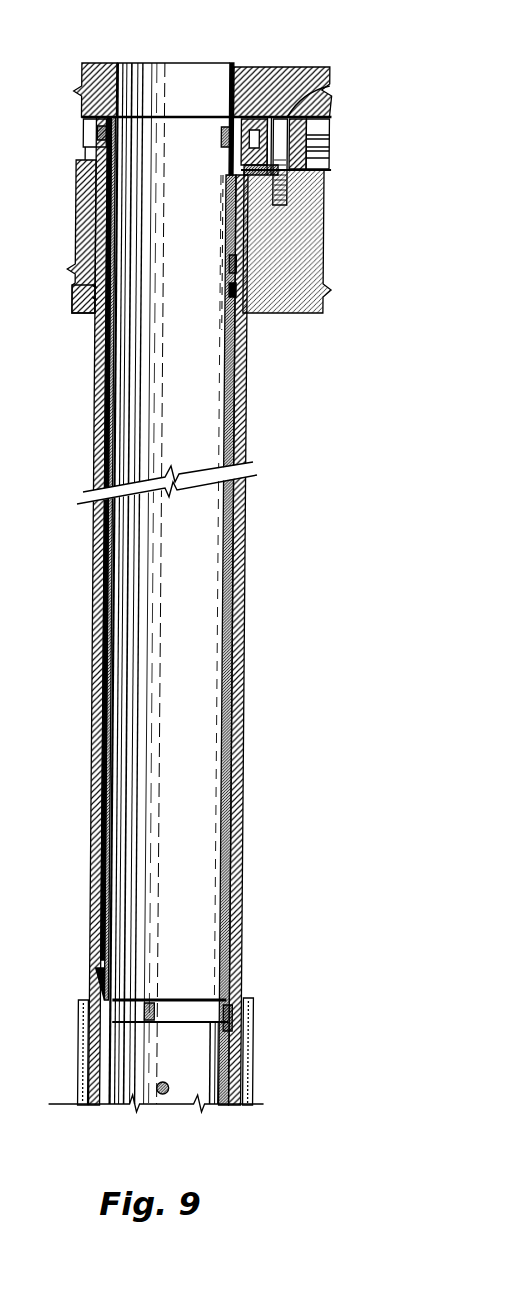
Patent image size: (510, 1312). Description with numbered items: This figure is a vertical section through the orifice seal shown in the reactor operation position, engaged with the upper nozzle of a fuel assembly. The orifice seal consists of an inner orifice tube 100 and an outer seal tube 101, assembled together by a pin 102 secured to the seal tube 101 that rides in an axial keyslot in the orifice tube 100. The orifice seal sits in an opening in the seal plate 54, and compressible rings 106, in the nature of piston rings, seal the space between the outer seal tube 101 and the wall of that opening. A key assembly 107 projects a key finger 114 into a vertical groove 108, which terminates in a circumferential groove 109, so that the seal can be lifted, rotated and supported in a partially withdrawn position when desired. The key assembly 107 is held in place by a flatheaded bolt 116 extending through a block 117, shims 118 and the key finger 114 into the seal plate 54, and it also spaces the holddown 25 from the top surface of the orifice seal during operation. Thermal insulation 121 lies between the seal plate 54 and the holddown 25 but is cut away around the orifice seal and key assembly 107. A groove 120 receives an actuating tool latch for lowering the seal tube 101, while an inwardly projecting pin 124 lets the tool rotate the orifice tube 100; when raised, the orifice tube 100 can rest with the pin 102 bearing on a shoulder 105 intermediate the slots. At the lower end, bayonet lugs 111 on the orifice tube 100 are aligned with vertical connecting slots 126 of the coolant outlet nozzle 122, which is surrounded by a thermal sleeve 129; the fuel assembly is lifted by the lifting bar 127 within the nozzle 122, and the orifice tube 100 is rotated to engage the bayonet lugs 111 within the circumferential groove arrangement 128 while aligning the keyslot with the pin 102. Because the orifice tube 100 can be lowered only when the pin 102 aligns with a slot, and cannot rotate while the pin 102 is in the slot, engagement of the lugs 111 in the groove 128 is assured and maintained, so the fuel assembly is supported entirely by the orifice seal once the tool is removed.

The holddown 25 is at (266, 66).
The flatheaded bolt 116 is at (306, 108).
The key assembly 107 is at (346, 120).
The groove 120 is at (82, 133).
The pin 102 is at (110, 133).
The inwardly projecting pin 124 is at (226, 143).
The shoulder 105 is at (228, 166).
The key finger 114 is at (226, 200).
The vertical groove 108 is at (229, 262).
The circumferential groove 109 is at (229, 290).
The inner orifice tube 100 is at (226, 351).
The outer seal tube 101 is at (249, 392).
The seal plate 54 is at (75, 221).
The compressible rings 106 is at (92, 299).
The block 117 is at (306, 134).
The thermal insulation 121 is at (328, 150).
The shims 118 is at (315, 158).
The bayonet lugs 111 is at (100, 977).
The connecting slot 126 is at (174, 1000).
The circumferential groove arrangement 128 is at (229, 1031).
The coolant outlet nozzle 122 is at (220, 1078).
The thermal sleeve 129 is at (84, 1072).
The lifting bar 127 is at (168, 1095).